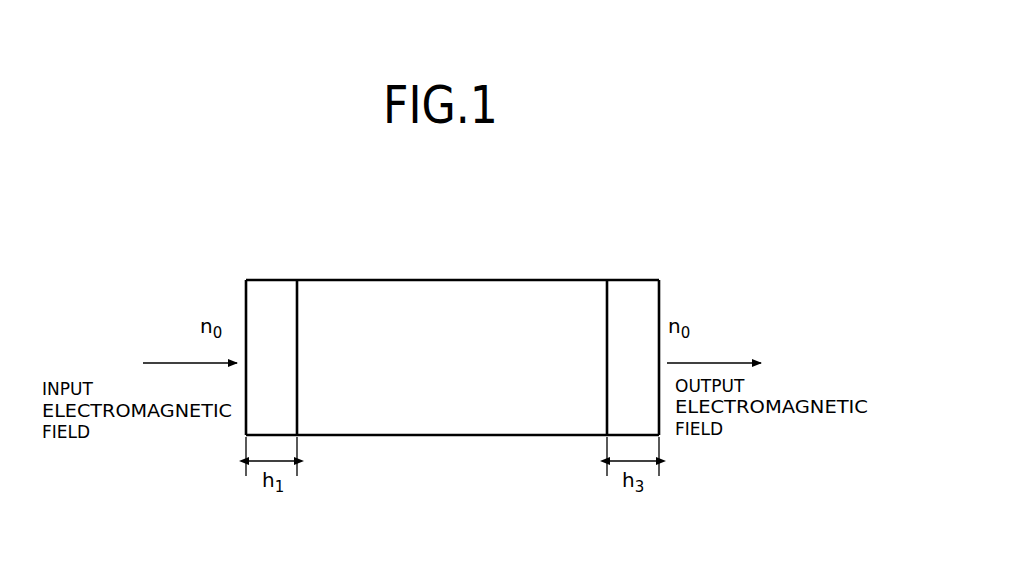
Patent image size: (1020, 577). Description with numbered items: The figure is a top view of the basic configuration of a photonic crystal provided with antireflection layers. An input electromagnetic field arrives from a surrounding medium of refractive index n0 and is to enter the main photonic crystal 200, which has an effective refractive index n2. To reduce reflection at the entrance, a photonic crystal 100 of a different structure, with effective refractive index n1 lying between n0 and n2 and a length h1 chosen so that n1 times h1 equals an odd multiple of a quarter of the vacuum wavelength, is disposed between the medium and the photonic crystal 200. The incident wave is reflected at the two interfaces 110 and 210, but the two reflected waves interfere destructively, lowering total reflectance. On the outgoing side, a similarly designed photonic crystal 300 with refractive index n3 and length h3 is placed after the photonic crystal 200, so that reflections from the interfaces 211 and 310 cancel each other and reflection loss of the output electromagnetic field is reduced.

The photonic crystal 100 is at (265, 290).
The photonic crystal 200 is at (437, 290).
The photonic crystal 300 is at (627, 290).
The interface 110 is at (246, 280).
The interface 210 is at (297, 280).
The interface 211 is at (607, 280).
The interface 310 is at (659, 280).